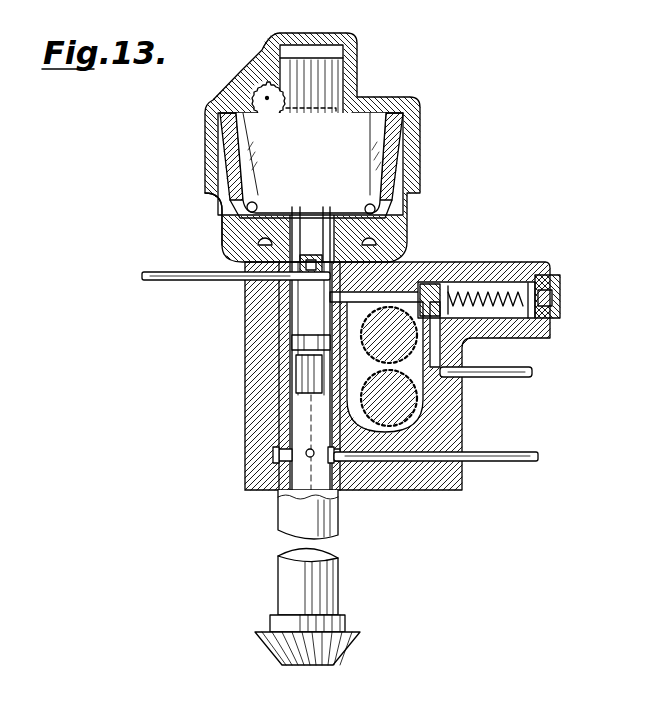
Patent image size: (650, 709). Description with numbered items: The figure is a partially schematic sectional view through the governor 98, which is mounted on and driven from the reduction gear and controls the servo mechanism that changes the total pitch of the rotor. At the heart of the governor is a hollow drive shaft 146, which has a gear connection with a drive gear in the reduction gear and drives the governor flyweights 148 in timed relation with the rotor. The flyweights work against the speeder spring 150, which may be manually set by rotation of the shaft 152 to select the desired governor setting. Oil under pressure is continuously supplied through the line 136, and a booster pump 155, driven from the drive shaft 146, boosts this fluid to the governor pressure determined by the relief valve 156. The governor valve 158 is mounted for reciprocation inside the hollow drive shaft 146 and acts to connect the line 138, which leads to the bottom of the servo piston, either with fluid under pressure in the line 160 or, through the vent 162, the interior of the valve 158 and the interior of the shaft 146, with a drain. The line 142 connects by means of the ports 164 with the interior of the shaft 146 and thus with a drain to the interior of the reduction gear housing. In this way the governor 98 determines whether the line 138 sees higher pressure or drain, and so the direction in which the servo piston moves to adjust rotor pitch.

The governor 98 is at (245, 410).
The line 136 is at (515, 373).
The line 138 is at (206, 282).
The line 142 is at (498, 458).
The drive shaft 146 is at (287, 578).
The governor flyweights 148 is at (390, 140).
The speeder spring 150 is at (352, 140).
The shaft 152 is at (258, 82).
The booster pump 155 is at (442, 284).
The relief valve 156 is at (455, 284).
The governor valve 158 is at (246, 264).
The line 160 is at (388, 330).
The vent 162 is at (243, 262).
The ports 164 is at (276, 456).